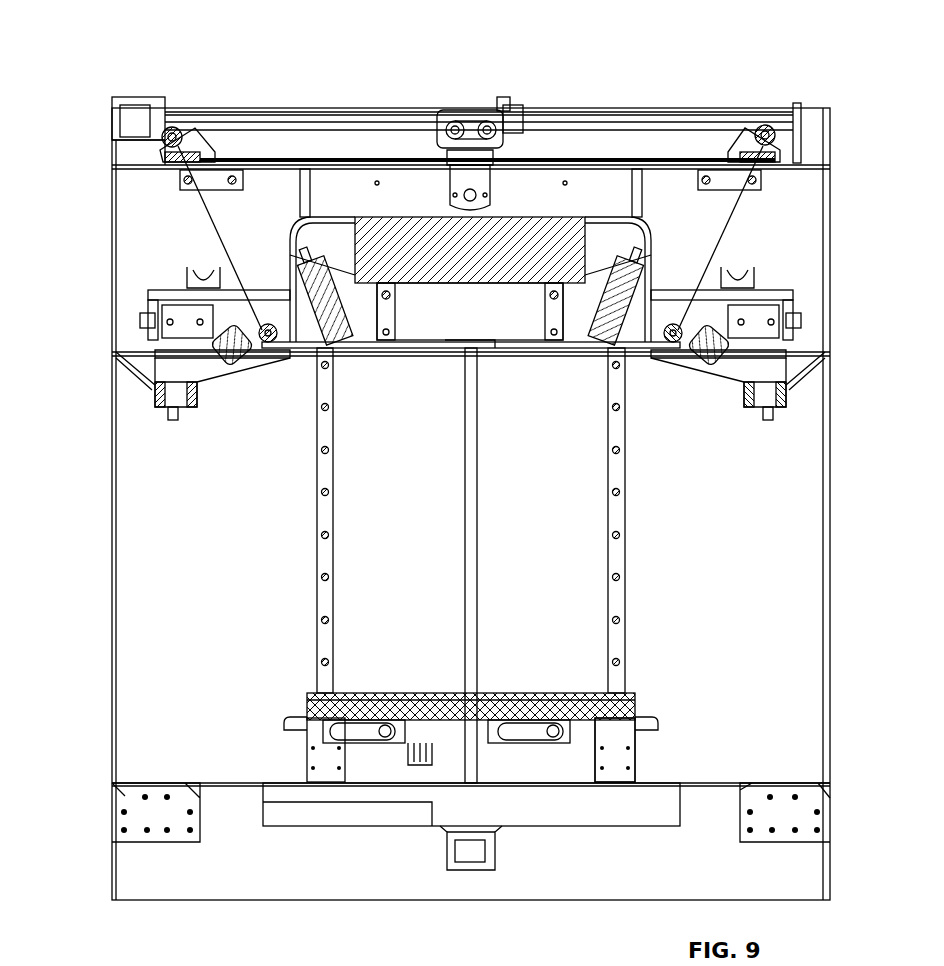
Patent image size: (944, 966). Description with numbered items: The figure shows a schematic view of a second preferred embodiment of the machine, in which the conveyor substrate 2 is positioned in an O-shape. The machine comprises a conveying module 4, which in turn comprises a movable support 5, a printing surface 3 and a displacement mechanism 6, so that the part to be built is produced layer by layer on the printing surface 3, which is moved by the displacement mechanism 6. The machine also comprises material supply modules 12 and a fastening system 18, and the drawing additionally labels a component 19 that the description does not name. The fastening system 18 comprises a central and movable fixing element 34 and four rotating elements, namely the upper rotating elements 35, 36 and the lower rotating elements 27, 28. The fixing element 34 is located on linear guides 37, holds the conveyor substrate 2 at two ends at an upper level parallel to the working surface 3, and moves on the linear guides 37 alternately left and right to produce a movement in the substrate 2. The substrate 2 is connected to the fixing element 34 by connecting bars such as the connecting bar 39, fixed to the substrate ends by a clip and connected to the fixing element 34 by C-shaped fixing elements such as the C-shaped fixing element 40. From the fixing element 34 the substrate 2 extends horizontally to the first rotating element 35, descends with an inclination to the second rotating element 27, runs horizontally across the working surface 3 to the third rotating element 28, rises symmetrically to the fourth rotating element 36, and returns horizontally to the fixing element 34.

The conveyor substrate 2 is at (735, 232).
The printing surface 3 is at (595, 693).
The conveying module 4 is at (658, 737).
The movable support 5 is at (633, 695).
The displacement mechanism 6 is at (380, 693).
The material supply module 12 is at (765, 272).
The fastening system 18 is at (275, 97).
The carriage block 19 is at (513, 305).
The second rotating element 27 is at (183, 293).
The third rotating element 28 is at (720, 327).
The central and movable fixing element 34 is at (450, 128).
The first rotating element 35 is at (170, 135).
The fourth rotating element 36 is at (766, 124).
The linear guides 37 is at (700, 108).
The connecting bar 39 is at (489, 108).
The C-shaped fixing element 40 is at (506, 105).